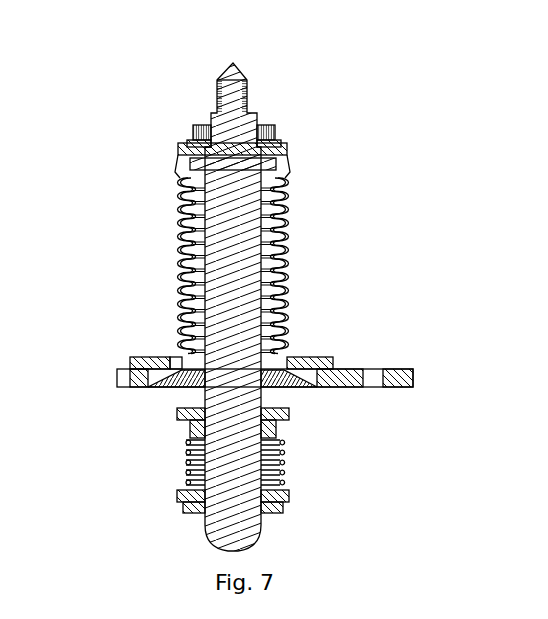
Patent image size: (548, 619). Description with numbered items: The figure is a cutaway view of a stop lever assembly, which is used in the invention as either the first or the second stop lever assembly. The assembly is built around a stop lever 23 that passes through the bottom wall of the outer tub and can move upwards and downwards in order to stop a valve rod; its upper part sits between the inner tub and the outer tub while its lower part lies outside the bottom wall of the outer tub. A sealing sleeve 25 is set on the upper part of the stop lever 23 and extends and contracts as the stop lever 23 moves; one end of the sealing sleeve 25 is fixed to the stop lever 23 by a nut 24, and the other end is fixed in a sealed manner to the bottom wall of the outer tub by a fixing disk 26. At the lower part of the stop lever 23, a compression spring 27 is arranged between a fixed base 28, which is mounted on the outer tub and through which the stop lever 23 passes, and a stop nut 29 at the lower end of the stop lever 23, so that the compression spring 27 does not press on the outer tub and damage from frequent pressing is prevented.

The stop lever 23 is at (218, 82).
The nut 24 is at (195, 132).
The sealing sleeve 25 is at (187, 230).
The fixing disk 26 is at (157, 357).
The compression spring 27 is at (185, 457).
The fixed base 28 is at (177, 417).
The stop nut 29 is at (185, 505).